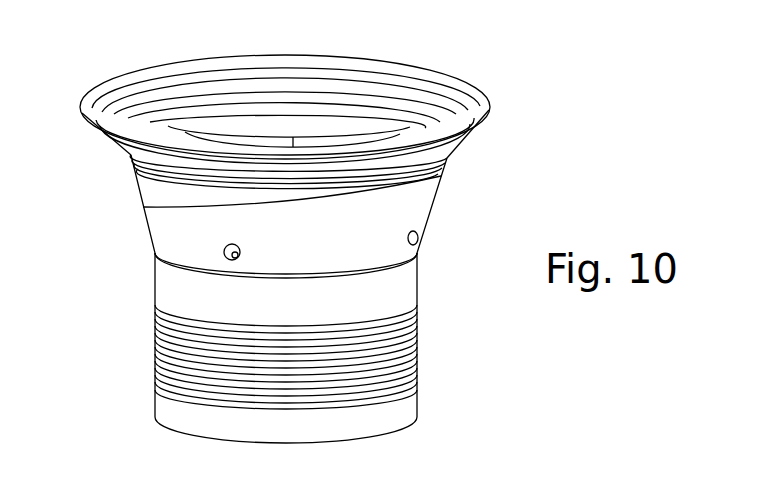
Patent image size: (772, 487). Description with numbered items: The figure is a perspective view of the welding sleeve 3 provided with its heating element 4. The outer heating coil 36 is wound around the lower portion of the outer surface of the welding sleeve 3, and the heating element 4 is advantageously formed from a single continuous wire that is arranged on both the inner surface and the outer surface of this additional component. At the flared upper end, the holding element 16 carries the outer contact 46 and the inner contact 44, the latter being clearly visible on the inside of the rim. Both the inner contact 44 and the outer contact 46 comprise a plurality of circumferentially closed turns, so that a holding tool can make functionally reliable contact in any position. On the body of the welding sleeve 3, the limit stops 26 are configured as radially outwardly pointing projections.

The welding sleeve 3 is at (172, 286).
The heating element 4 is at (207, 352).
The holding element 16 is at (92, 110).
The limit stops 26 is at (418, 240).
The outer heating coil 36 is at (417, 348).
The inner contact 44 is at (145, 95).
The outer contact 46 is at (132, 158).